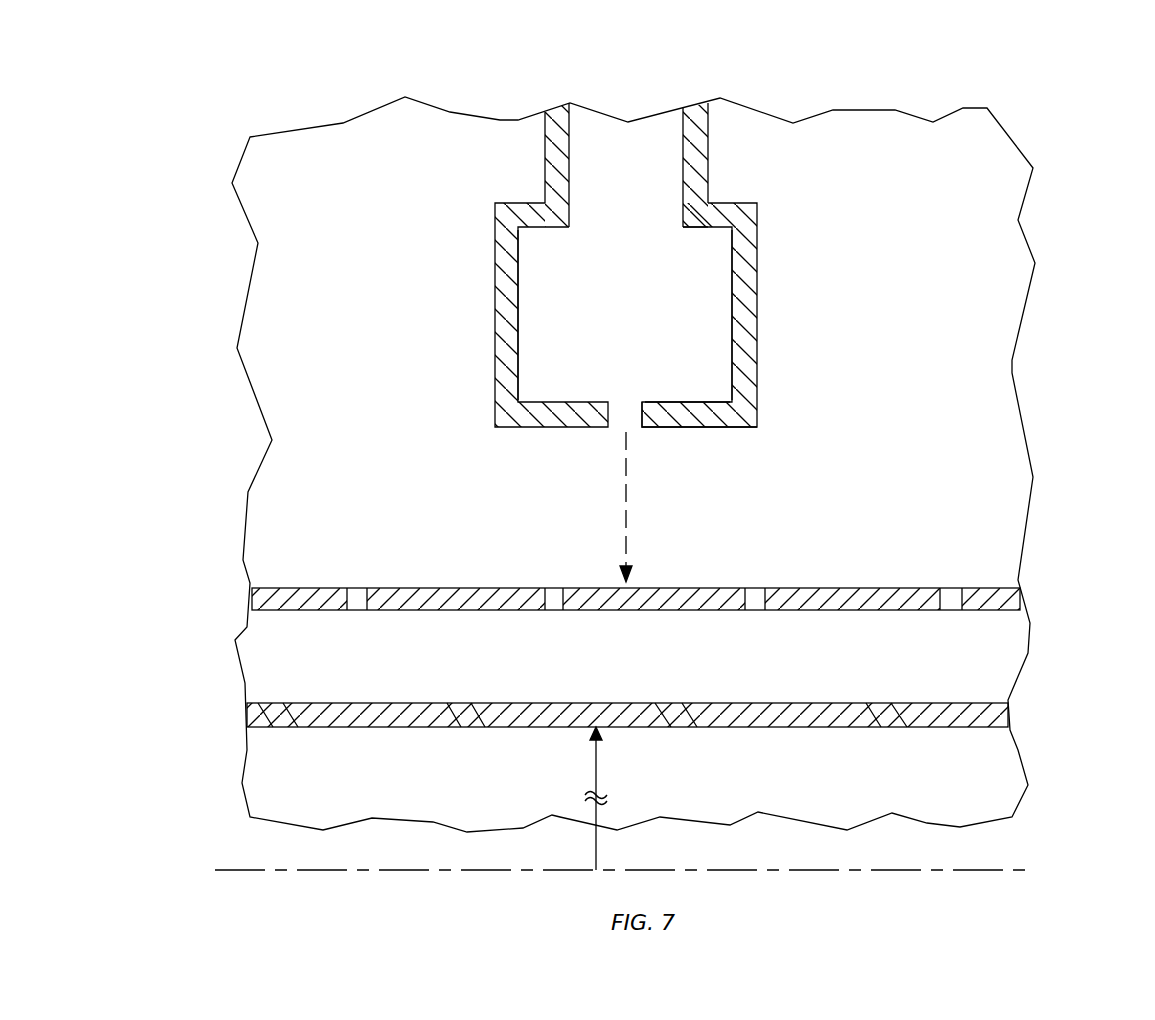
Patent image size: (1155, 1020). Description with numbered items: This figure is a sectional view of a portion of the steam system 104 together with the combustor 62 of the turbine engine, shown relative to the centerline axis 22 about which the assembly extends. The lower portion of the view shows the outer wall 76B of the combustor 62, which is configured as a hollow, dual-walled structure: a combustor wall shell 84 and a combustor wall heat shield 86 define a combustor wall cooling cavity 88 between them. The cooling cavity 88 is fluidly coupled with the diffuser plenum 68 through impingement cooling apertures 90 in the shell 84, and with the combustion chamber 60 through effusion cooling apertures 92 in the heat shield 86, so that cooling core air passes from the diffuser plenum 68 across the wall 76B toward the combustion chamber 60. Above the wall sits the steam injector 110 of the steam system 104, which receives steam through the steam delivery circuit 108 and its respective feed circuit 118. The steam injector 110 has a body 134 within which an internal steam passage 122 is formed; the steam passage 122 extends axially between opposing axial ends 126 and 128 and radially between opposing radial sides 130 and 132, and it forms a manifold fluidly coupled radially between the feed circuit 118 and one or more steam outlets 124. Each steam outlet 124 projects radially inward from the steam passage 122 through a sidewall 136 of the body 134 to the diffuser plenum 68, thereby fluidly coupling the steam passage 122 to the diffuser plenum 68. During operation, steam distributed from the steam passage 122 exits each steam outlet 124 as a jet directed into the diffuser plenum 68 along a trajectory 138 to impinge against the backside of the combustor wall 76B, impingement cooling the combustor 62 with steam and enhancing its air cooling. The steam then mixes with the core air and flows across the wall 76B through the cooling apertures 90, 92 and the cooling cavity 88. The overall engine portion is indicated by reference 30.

The centerline axis 22 is at (228, 870).
The gas turbine engine section 30 is at (1041, 90).
The combustion chamber 60 is at (624, 800).
The combustor 62 is at (692, 655).
The outer wall 76B is at (692, 655).
The diffuser plenum 68 is at (864, 450).
The combustor wall shell 84 is at (1008, 597).
The combustor wall heat shield 86 is at (1000, 712).
The combustor wall cooling cavity 88 is at (639, 670).
The cooling apertures 90 is at (357, 590).
The cooling apertures 92 is at (258, 725).
The steam system 104 is at (566, 86).
The steam delivery circuit 108 is at (716, 142).
The feed circuit 118 is at (750, 143).
The steam injector 110 is at (684, 243).
The steam passage 122 is at (554, 309).
The steam outlets 124 is at (619, 428).
The axial end 126 is at (518, 340).
The axial end 128 is at (732, 300).
The radial side 130 is at (692, 400).
The radial side 132 is at (708, 228).
The body 134 is at (772, 326).
The sidewall 136 is at (680, 425).
The trajectory 138 is at (628, 492).